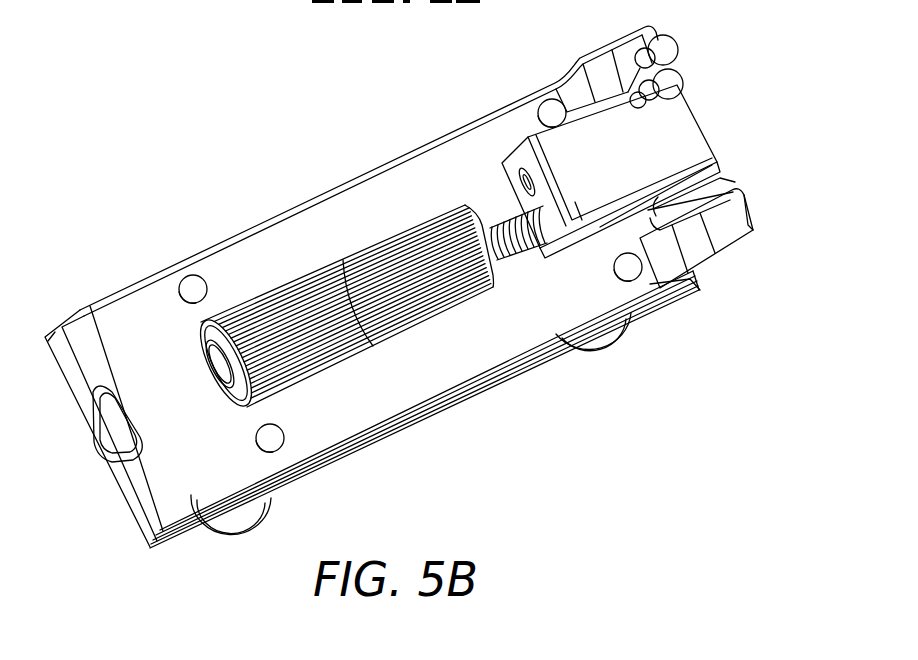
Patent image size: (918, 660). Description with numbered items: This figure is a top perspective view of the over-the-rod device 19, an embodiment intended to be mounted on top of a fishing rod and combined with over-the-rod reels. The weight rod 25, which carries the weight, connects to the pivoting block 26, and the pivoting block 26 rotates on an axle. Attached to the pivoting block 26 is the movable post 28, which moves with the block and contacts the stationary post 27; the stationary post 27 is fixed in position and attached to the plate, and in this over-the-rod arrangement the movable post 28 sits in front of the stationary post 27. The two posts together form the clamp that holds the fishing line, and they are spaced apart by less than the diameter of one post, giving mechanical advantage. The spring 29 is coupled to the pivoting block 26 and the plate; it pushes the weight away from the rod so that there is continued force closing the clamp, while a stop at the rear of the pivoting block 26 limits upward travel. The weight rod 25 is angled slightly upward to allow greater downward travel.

The over-the-rod device 19 is at (210, 184).
The weight rod 25 is at (508, 222).
The pivoting block 26 is at (577, 203).
The stationary post 27 is at (666, 47).
The movable post 28 is at (684, 80).
The spring 29 is at (712, 176).